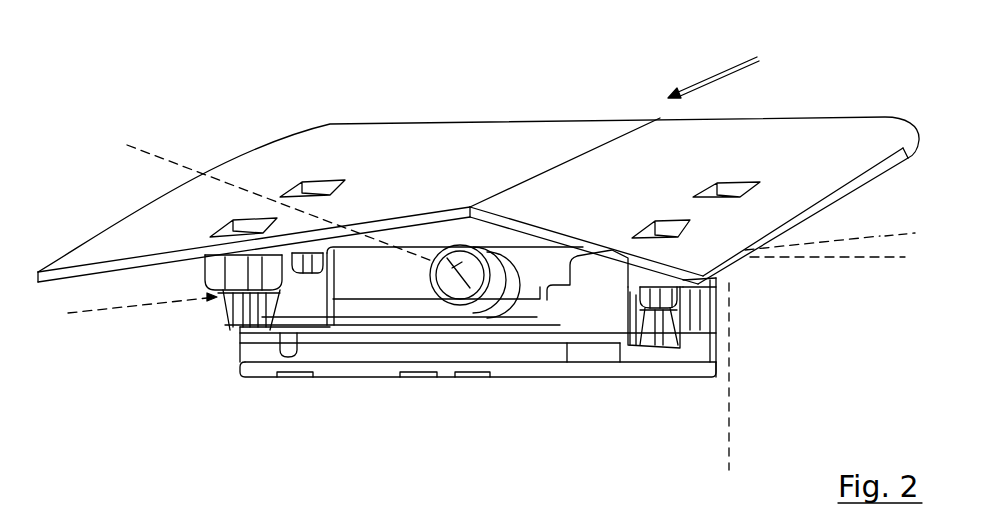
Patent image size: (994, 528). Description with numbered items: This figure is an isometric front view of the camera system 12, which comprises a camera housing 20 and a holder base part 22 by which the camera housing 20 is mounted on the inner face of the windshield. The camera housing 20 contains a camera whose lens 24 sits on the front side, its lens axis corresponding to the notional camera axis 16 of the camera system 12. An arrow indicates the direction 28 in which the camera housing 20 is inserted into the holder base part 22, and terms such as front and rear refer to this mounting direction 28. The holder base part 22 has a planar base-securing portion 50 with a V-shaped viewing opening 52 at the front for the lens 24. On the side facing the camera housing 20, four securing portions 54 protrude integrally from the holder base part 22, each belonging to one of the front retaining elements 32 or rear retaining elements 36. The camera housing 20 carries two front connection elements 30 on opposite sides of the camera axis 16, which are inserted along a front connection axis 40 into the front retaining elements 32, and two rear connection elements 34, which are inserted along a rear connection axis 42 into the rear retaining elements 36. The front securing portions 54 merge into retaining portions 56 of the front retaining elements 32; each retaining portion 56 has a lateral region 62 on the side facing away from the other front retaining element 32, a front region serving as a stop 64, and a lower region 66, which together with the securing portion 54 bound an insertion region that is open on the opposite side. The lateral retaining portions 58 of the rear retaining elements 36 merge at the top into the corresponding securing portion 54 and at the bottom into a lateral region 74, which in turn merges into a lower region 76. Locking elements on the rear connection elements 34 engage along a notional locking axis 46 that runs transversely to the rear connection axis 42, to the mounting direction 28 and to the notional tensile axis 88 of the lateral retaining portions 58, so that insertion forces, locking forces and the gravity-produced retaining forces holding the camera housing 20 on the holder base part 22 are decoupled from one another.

The camera system 12 is at (108, 70).
The camera axis 16 is at (127, 145).
The camera housing 20 is at (467, 388).
The holder base part 22 is at (477, 109).
The lens 24 is at (500, 313).
The direction of insertion 28 is at (743, 65).
The front connection element 30 is at (243, 327).
The front retaining element 32 is at (197, 275).
The rear connection element 34 is at (330, 250).
The rear retaining element 36 is at (210, 253).
The front connection axis 40 is at (68, 313).
The rear connection axis 42 is at (895, 232).
The locking axis 46 is at (877, 257).
The base-securing portion 50 is at (427, 143).
The viewing opening 52 is at (437, 233).
The securing portion 54 is at (150, 256).
The retaining portion 56 is at (230, 300).
The lateral retaining portion 58 is at (753, 248).
The lateral region 62 is at (683, 297).
The stop 64 is at (215, 300).
The lower region 66 is at (248, 323).
The lateral region 74 is at (765, 272).
The lower region 76 is at (727, 278).
The tensile axis 88 is at (732, 458).